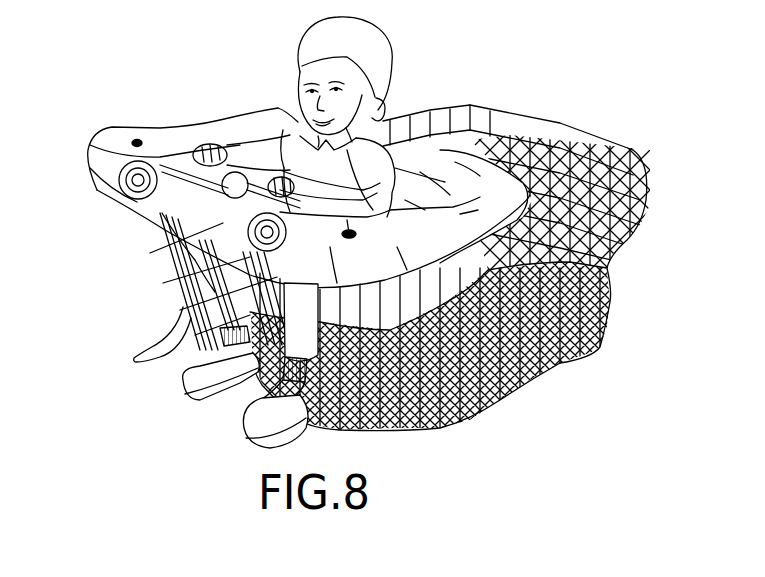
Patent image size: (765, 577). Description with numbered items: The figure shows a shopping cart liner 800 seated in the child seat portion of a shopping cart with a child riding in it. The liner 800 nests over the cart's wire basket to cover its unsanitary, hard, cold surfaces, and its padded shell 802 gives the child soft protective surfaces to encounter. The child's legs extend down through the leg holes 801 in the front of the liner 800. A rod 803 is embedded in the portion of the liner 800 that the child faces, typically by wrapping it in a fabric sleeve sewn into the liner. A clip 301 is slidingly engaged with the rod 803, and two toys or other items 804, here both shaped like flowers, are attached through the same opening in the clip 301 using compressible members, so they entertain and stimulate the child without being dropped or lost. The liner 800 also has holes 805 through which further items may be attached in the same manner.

The shopping cart liner 800 is at (186, 104).
The leg holes 801 is at (172, 342).
The padded shell 802 is at (425, 150).
The rod 803 is at (332, 226).
The items 804 is at (100, 196).
The holes 805 is at (133, 141).
The clip 301 is at (160, 214).